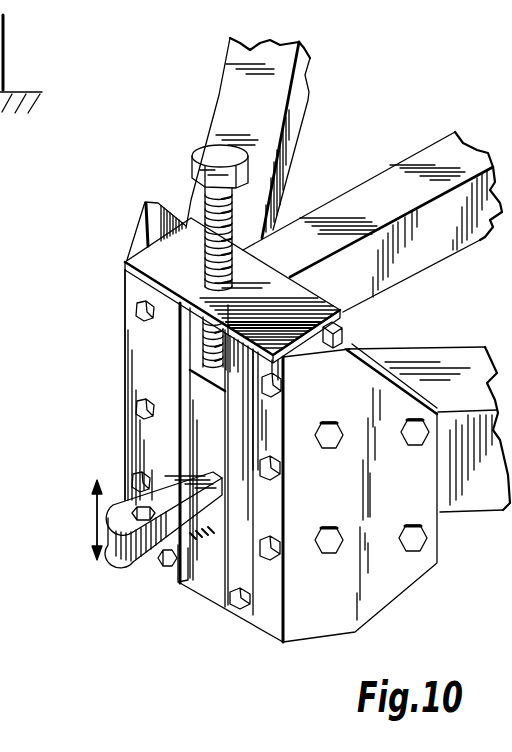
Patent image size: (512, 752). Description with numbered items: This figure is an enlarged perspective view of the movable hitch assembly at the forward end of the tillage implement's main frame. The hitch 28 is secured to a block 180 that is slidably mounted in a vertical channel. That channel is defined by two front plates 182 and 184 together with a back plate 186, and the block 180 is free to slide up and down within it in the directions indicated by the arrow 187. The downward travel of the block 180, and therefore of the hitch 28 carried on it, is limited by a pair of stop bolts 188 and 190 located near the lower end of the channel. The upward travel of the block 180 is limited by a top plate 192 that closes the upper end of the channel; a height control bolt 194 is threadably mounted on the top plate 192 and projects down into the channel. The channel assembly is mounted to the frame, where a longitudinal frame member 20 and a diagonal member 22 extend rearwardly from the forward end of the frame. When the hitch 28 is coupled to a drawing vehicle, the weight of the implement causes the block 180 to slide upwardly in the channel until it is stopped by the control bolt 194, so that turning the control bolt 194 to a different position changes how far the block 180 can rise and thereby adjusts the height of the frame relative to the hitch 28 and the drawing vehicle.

The longitudinal frame members 20 is at (404, 165).
The diagonal member 22 is at (297, 122).
The hitch 28 is at (130, 550).
The block 180 is at (203, 425).
The front plate 182 is at (130, 343).
The front plate 184 is at (276, 591).
The back plate 186 is at (344, 335).
The arrow 187 is at (92, 519).
The stop bolt 188 is at (165, 568).
The stop bolt 190 is at (238, 608).
The top plate 192 is at (300, 297).
The height control bolt 194 is at (192, 161).